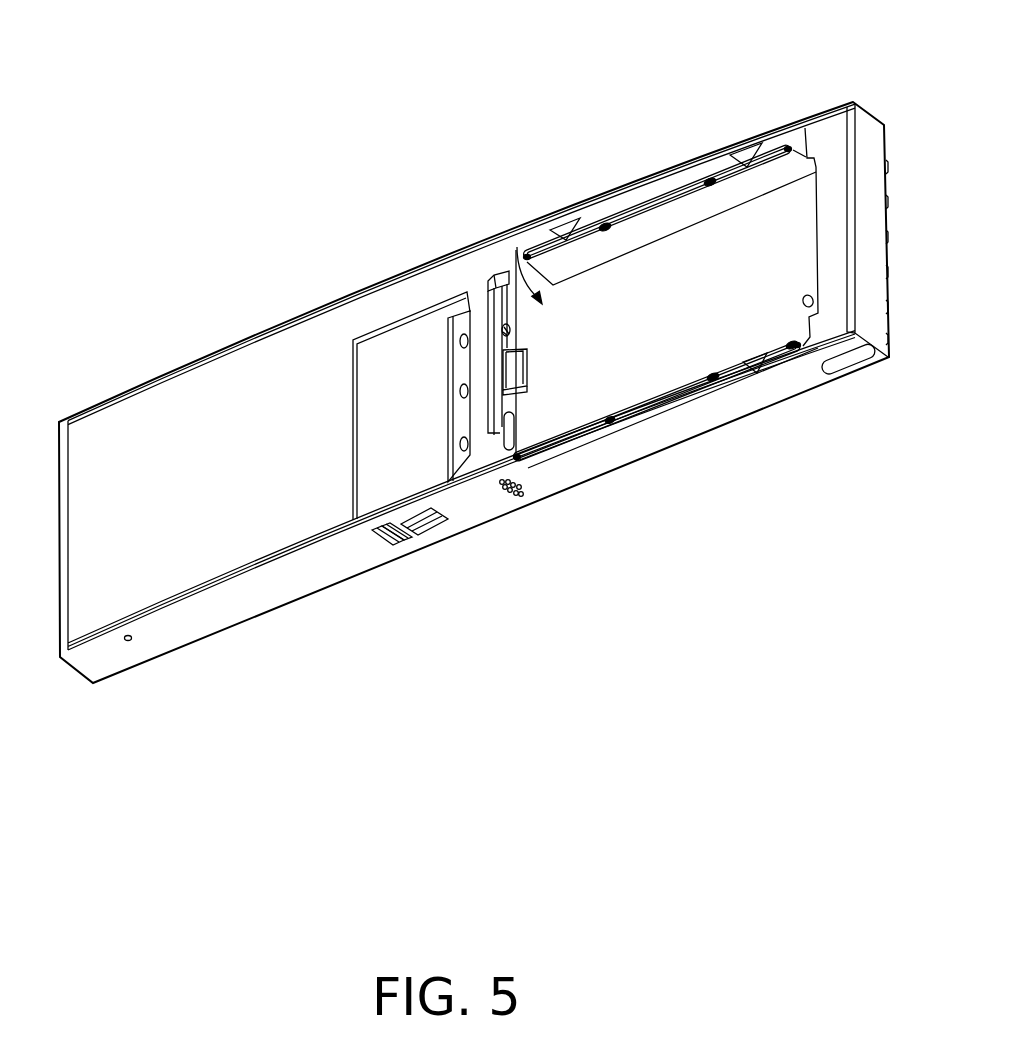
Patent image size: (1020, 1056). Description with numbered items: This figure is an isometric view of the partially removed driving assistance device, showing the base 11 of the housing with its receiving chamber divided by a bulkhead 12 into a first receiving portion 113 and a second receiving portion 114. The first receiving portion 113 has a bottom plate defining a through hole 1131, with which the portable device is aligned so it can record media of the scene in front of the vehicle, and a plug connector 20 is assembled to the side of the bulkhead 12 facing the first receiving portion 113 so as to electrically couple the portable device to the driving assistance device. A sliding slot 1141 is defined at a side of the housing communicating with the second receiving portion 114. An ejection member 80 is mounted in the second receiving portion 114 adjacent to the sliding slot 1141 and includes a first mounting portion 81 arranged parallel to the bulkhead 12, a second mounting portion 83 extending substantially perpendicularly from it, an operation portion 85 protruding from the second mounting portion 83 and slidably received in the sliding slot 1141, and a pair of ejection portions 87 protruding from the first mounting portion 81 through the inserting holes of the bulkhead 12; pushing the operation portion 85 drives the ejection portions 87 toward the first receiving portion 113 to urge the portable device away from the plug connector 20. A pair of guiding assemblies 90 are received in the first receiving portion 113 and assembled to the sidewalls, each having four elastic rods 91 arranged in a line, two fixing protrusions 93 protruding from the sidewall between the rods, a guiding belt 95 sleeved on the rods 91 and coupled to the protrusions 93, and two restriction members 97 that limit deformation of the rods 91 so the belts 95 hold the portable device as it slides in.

The base 11 is at (553, 156).
The first receiving portion 113 is at (513, 271).
The second receiving portion 114 is at (412, 318).
The sliding slot 1141 is at (425, 525).
The through hole 1131 is at (808, 310).
The bulkhead 12 is at (507, 450).
The plug connector 20 is at (515, 377).
The ejection member 80 is at (445, 428).
The first mounting portion 81 is at (458, 365).
The second mounting portion 83 is at (408, 540).
The operation portion 85 is at (398, 543).
The ejection portions 87 is at (517, 340).
The guiding assemblies 90 is at (783, 19).
The elastic rods 91 is at (604, 222).
The fixing protrusions 93 is at (566, 221).
The guiding belt 95 is at (778, 177).
The restriction members 97 is at (713, 178).